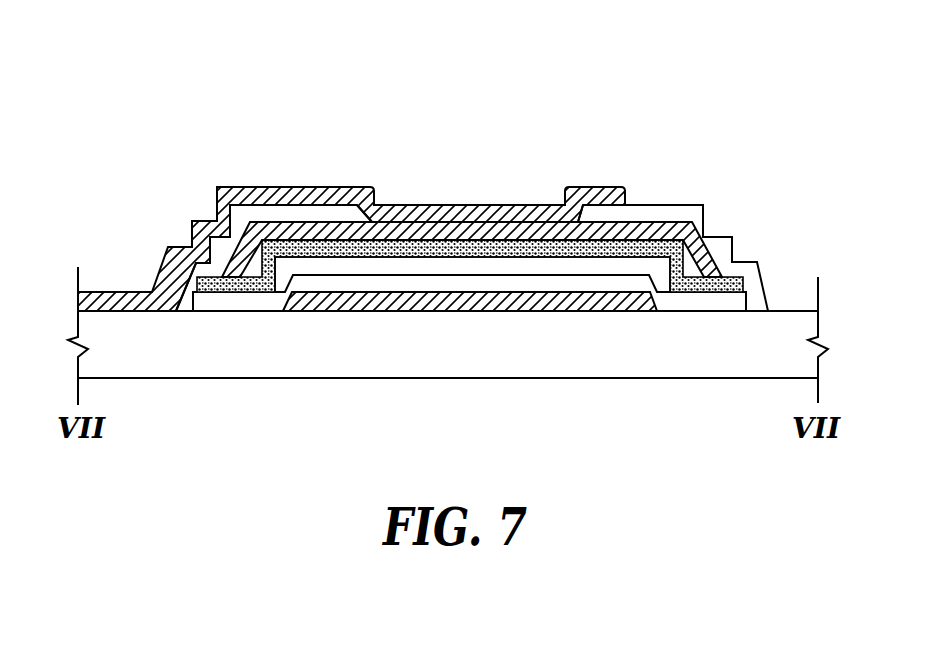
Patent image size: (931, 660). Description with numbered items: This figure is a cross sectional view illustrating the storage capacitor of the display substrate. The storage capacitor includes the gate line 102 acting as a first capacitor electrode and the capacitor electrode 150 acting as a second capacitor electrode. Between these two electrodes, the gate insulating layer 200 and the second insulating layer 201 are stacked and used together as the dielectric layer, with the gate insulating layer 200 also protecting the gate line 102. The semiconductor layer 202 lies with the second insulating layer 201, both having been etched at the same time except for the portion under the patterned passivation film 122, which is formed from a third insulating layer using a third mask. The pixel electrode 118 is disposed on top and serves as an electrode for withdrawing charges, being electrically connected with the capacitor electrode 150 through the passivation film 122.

The gate line 102 is at (400, 300).
The pixel electrode 118 is at (290, 188).
The passivation film 122 is at (598, 210).
The capacitor electrode 150 is at (675, 230).
The gate insulating layer 200 is at (457, 283).
The second insulating layer 201 is at (530, 265).
The semiconductor layer 202 is at (605, 253).